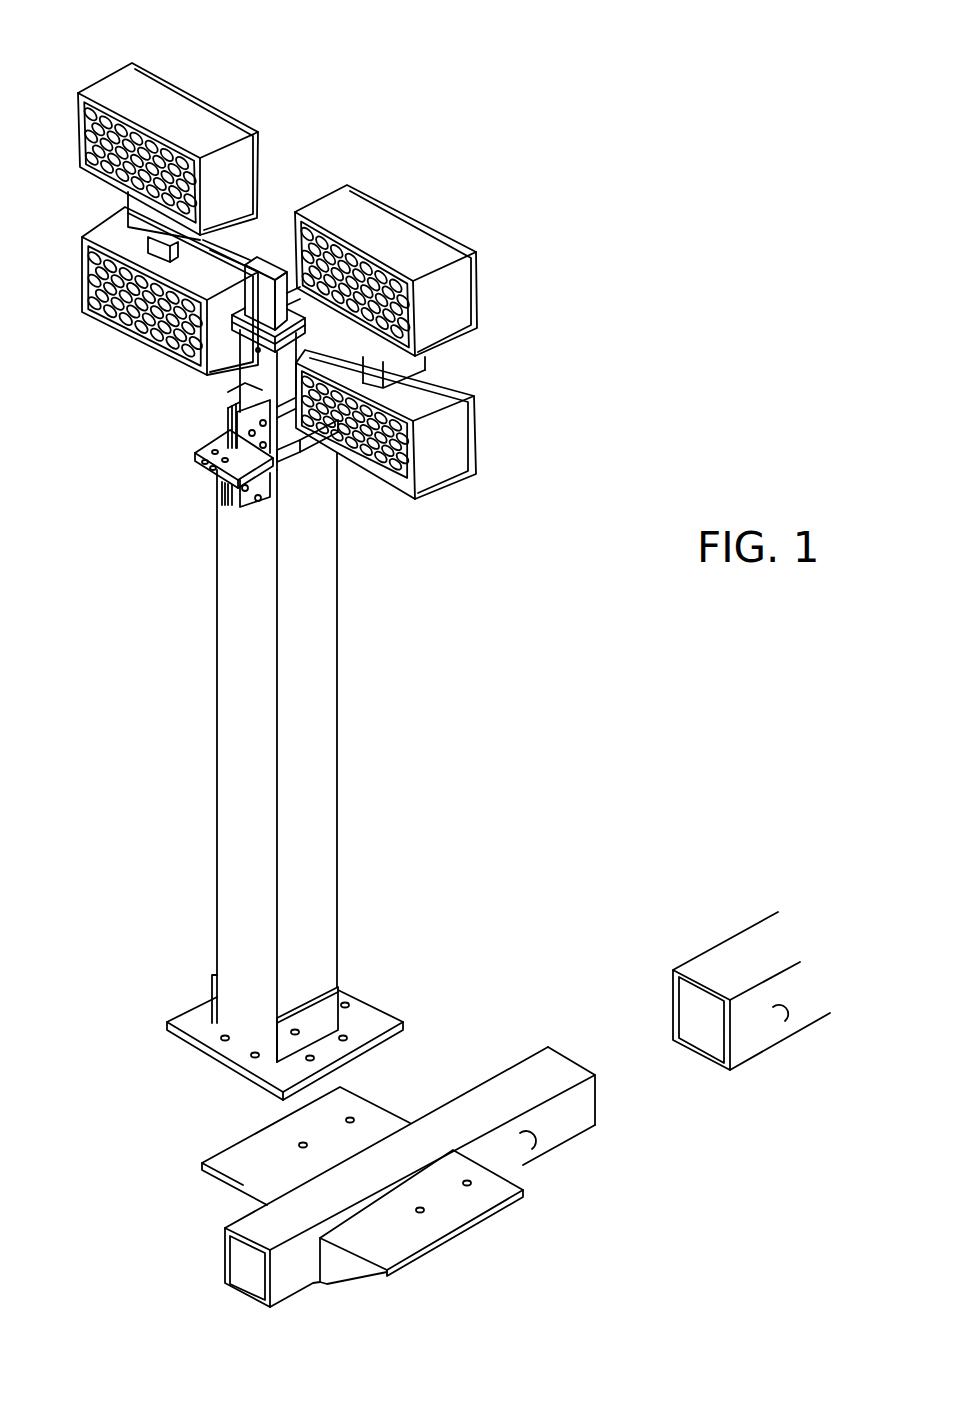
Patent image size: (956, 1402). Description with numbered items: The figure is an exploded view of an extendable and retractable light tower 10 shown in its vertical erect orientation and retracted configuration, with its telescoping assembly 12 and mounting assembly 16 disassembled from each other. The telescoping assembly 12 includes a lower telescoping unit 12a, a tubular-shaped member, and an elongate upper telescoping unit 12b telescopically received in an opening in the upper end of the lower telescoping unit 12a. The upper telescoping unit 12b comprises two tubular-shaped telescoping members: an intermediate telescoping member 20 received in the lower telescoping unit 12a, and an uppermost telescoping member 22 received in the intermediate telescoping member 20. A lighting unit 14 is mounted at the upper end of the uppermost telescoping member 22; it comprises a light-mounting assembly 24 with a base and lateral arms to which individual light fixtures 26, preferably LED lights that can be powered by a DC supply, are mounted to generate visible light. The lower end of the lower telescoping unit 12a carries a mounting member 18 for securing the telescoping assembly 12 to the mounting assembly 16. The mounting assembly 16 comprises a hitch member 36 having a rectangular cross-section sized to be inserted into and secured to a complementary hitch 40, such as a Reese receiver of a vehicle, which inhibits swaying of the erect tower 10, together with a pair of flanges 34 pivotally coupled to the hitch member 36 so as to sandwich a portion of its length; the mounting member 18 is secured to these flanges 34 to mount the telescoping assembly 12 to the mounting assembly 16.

The light tower 10 is at (628, 250).
The telescoping assembly 12 is at (392, 767).
The lower telescoping unit 12a is at (248, 755).
The upper telescoping unit 12b is at (221, 394).
The lighting unit 14 is at (470, 213).
The mounting assembly 16 is at (613, 1163).
The mounting member 18 is at (230, 1045).
The intermediate telescoping member 20 is at (290, 443).
The uppermost telescoping member 22 is at (260, 382).
The light-mounting assembly 24 is at (273, 258).
The light fixtures 26 is at (192, 122).
The flanges 34 is at (370, 1238).
The hitch member 36 is at (488, 1097).
The hitch 40 is at (708, 905).